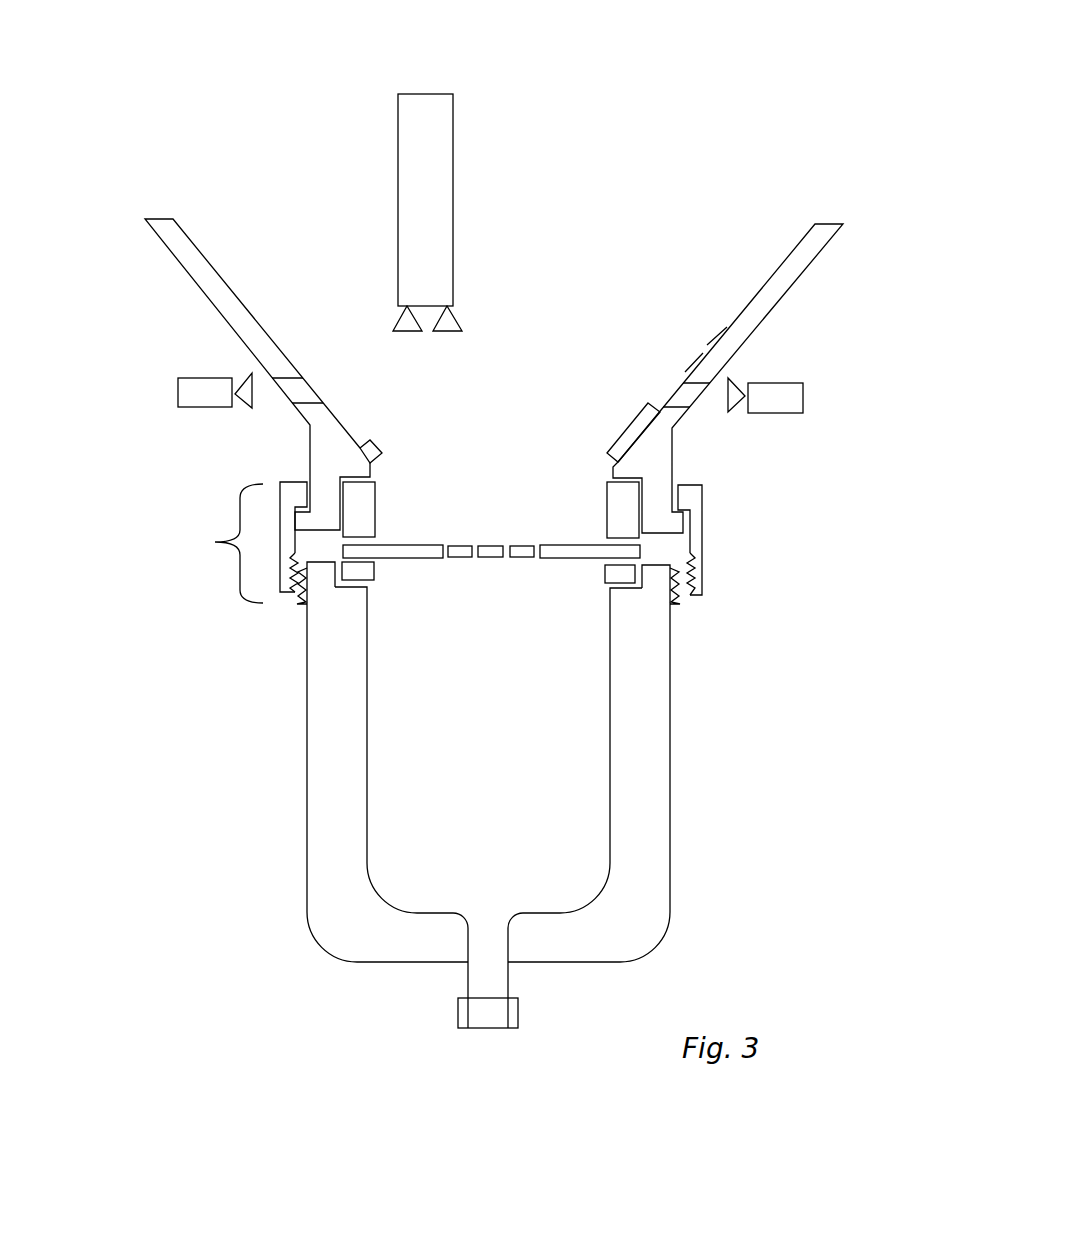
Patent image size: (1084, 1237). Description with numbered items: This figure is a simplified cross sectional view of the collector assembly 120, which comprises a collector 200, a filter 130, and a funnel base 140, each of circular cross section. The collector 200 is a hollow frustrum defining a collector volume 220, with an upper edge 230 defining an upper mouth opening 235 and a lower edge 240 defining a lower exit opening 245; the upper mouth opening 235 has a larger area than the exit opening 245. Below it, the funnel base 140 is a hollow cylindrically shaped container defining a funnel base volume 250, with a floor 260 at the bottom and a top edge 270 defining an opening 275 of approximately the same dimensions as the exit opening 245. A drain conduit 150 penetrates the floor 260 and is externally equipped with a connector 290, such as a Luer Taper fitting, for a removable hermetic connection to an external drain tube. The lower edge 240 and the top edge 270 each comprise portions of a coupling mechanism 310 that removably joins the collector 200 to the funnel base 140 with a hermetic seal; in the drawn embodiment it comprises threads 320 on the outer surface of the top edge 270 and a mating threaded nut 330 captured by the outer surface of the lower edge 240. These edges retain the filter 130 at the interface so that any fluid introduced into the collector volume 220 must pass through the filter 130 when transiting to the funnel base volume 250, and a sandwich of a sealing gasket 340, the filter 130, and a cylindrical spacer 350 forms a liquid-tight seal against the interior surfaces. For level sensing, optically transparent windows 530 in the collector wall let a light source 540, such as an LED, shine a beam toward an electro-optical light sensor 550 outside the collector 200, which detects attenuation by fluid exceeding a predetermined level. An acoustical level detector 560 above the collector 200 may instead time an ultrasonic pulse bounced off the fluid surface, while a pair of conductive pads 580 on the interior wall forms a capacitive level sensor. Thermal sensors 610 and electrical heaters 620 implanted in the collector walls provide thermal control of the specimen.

The collector assembly 120 is at (154, 128).
The filter 130 is at (548, 553).
The funnel base 140 is at (648, 803).
The drain conduit 150 is at (497, 973).
The collector 200 is at (717, 357).
The collector volume 220 is at (340, 355).
The upper edge 230 is at (761, 349).
The upper mouth opening 235 is at (628, 227).
The lower edge 240 is at (668, 538).
The lower exit opening 245 is at (547, 618).
The funnel base volume 250 is at (420, 783).
The floor 260 is at (587, 915).
The top edge 270 is at (655, 575).
The opening 275 is at (487, 573).
The connector 290 is at (523, 1020).
The coupling mechanism 310 is at (195, 584).
The threads 320 is at (300, 602).
The threaded nut 330 is at (273, 540).
The gasket 340 is at (355, 502).
The spacer 350 is at (352, 570).
The optical window 530 is at (725, 440).
The light source 540 is at (210, 397).
The electro-optical light sensor 550 is at (768, 405).
The acoustical level detector 560 is at (436, 180).
The conductive pads 580 is at (685, 372).
The thermal sensor 610 is at (382, 455).
The electrical heater 620 is at (625, 443).